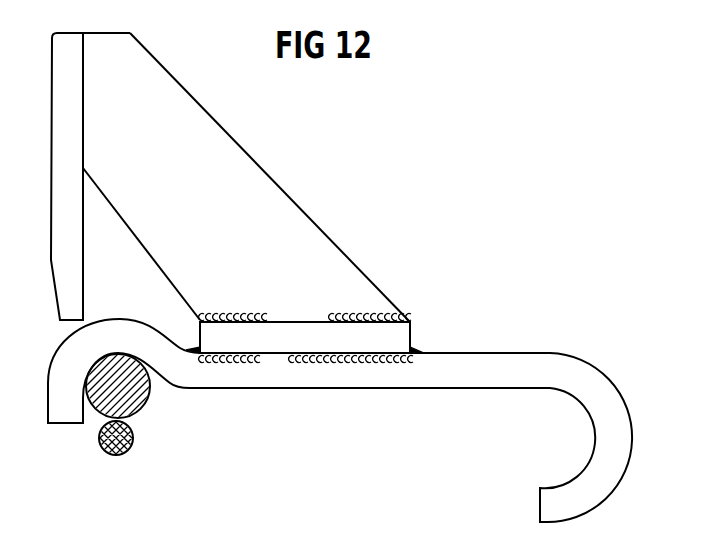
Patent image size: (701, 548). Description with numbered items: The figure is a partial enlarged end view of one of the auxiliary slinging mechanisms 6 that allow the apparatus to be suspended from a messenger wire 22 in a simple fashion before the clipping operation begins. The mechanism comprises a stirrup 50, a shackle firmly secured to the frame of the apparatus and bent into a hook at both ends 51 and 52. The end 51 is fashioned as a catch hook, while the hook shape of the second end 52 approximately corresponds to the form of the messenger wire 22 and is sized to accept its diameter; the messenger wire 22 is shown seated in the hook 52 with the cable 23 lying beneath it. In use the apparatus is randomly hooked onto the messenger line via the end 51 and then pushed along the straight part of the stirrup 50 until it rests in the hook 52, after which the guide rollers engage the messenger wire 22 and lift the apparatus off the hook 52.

The auxiliary slinging mechanism 6 is at (487, 353).
The stirrup 50 is at (343, 378).
The messenger wire 22 is at (128, 400).
The cable 23 is at (122, 456).
The hook end 51 is at (567, 492).
The hook end 52 is at (56, 386).